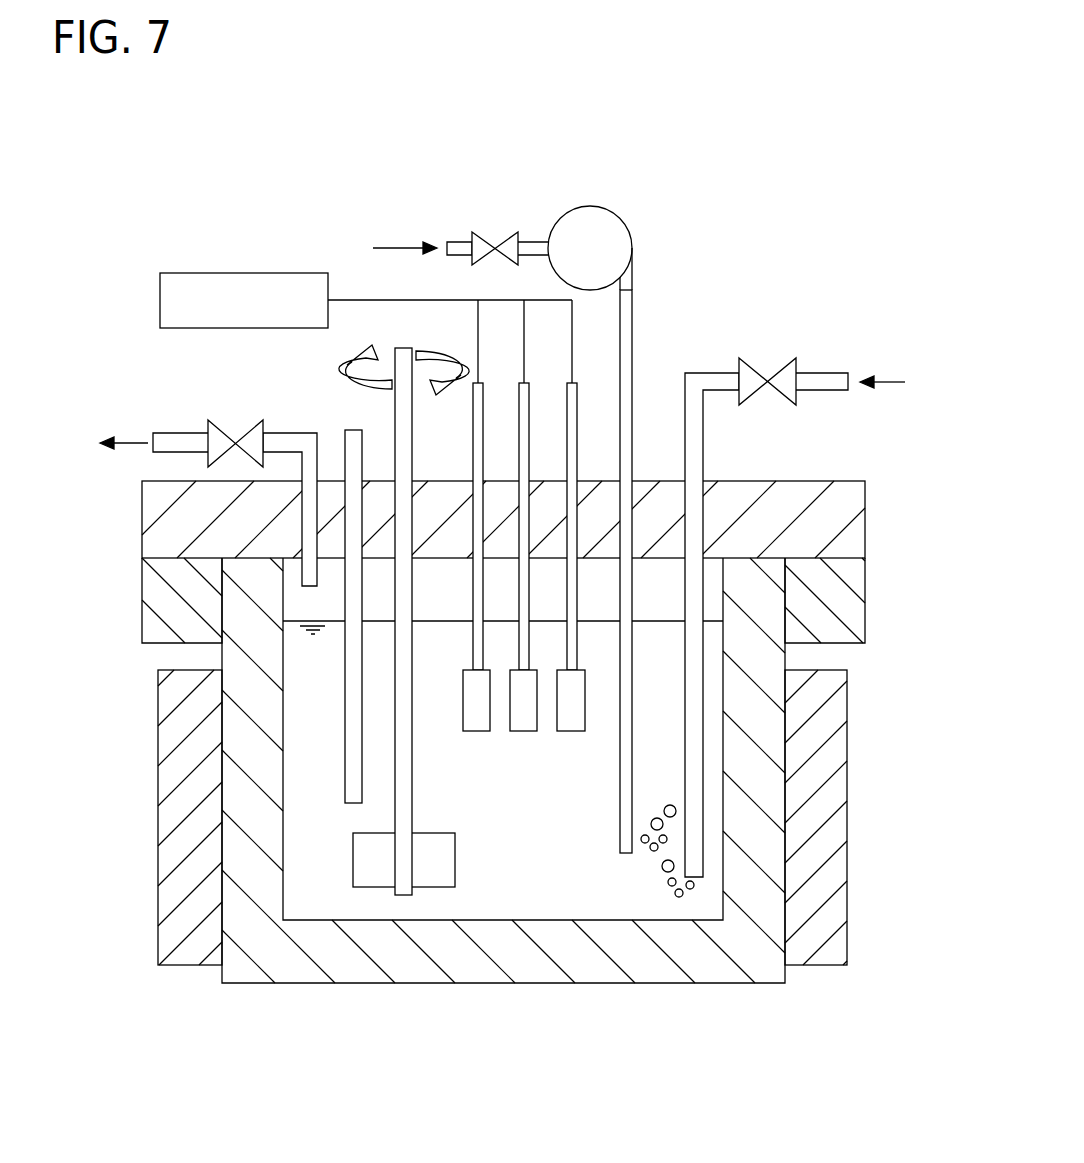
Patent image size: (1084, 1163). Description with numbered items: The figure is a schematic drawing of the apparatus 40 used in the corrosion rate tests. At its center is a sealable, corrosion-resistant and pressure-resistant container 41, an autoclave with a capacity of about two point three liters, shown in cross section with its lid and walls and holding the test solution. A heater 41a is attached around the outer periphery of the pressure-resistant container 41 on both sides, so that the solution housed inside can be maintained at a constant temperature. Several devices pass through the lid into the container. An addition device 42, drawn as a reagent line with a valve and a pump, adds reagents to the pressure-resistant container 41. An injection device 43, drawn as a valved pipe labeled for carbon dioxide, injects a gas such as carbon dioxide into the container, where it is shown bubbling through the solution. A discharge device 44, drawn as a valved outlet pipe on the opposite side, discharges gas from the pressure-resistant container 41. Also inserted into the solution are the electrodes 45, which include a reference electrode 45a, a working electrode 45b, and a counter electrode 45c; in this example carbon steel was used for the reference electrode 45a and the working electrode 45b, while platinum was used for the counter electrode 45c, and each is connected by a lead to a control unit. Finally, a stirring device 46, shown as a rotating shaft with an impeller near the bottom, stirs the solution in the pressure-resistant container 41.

The apparatus 40 is at (503, 581).
The pressure-resistant container 41 is at (722, 998).
The heater 41a is at (158, 803).
The addition device 42 is at (642, 325).
The injection device 43 is at (779, 350).
The discharge device 44 is at (228, 410).
The electrodes 45 is at (524, 743).
The reference electrode 45a is at (568, 731).
The working electrode 45b is at (521, 731).
The counter electrode 45c is at (474, 731).
The stirring device 46 is at (385, 408).